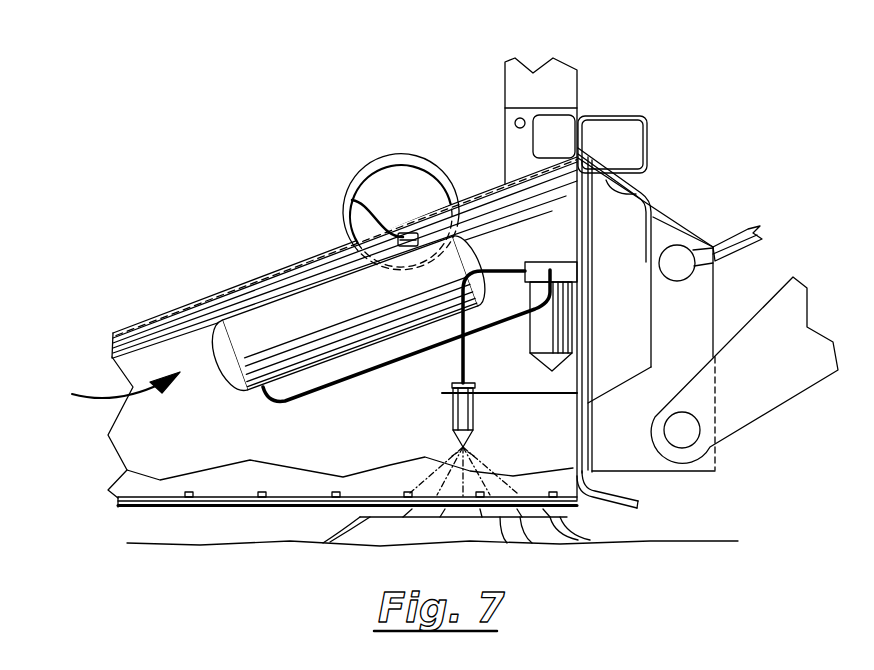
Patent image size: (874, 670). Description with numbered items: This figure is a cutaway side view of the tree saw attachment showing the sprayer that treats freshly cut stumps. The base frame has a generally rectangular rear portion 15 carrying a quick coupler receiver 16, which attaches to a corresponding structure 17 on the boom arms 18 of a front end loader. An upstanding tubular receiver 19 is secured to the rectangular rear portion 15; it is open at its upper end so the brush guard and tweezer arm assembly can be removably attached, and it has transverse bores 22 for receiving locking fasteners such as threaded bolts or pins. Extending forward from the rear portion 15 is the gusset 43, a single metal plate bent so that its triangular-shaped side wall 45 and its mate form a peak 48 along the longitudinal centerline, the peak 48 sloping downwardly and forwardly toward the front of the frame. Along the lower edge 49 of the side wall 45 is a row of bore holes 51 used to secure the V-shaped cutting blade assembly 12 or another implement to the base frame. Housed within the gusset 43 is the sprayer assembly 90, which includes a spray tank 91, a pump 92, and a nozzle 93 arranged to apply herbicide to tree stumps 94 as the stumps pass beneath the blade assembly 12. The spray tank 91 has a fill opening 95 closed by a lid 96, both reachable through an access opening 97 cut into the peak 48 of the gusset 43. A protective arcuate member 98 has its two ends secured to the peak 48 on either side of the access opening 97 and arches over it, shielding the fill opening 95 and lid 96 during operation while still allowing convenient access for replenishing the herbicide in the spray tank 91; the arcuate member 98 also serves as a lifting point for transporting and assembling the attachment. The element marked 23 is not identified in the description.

The V-shaped cutting blade assembly 12 is at (140, 507).
The rectangular rear portion 15 is at (587, 221).
The quick coupler receiver 16 is at (637, 193).
The corresponding structure 17 is at (633, 460).
The boom arms 18 is at (777, 380).
The upstanding tubular receiver 19 is at (523, 146).
The transverse bores 22 is at (515, 118).
The post 23 is at (555, 72).
The gusset 43 is at (157, 335).
The first triangular-shaped side wall 45 is at (230, 478).
The peak 48 is at (223, 292).
The lower edge 49 is at (167, 500).
The bore holes 51 is at (337, 491).
The sprayer assembly 90 is at (107, 390).
The spray tank 91 is at (327, 298).
The pump 92 is at (557, 316).
The nozzle 93 is at (462, 411).
The tree stumps 94 is at (390, 528).
The fill opening 95 is at (352, 218).
The lid 96 is at (405, 236).
The access opening 97 is at (428, 228).
The protective arcuate member 98 is at (355, 192).